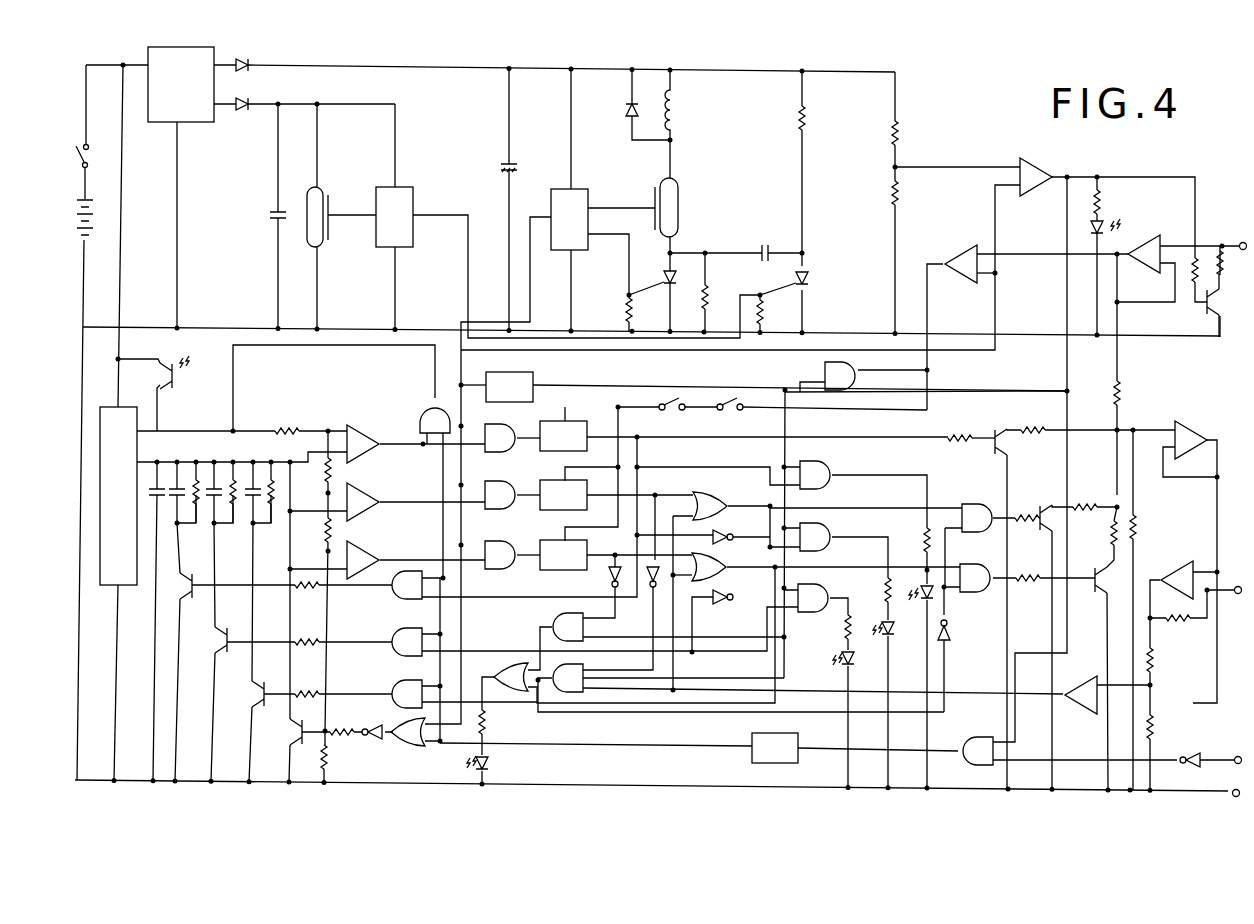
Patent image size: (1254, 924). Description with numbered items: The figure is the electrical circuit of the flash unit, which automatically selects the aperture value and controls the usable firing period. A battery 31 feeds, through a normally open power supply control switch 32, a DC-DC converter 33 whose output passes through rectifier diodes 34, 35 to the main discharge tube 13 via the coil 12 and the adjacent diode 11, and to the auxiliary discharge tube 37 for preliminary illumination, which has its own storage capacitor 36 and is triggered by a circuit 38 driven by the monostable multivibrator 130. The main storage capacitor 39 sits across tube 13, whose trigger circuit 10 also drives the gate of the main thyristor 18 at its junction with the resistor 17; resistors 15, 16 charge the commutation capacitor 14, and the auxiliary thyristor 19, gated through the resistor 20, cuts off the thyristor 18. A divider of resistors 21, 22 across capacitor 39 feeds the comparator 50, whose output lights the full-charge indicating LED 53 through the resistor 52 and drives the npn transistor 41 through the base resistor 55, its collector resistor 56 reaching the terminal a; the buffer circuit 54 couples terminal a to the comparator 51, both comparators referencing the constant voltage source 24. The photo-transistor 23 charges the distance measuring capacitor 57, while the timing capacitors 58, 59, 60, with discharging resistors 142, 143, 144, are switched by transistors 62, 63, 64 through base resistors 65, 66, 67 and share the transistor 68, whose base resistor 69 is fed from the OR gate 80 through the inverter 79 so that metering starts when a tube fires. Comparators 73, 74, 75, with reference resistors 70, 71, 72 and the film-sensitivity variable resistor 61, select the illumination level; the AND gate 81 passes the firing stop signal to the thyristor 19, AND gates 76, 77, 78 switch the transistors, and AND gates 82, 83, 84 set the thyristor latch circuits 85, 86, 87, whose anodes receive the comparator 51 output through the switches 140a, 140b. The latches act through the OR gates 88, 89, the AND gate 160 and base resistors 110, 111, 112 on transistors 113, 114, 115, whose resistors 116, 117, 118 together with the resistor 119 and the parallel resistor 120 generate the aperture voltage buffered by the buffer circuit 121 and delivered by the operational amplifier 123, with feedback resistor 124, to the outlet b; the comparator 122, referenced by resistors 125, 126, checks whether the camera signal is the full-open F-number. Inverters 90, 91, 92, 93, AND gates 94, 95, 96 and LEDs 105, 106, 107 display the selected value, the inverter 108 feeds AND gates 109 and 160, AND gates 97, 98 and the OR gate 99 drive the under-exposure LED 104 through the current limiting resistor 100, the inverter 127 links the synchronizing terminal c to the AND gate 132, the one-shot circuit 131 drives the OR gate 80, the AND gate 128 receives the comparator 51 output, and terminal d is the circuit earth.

The trigger circuit 10 is at (588, 191).
The diode 11 is at (624, 124).
The coil 12 is at (676, 100).
The main discharge tube 13 is at (678, 202).
The commutation capacitor 14 is at (765, 245).
The resistor 15 is at (810, 112).
The resistor 16 is at (710, 303).
The resistor 17 is at (620, 304).
The main thyristor 18 is at (678, 286).
The auxiliary thyristor 19 is at (792, 280).
The resistor 20 is at (765, 313).
The resistor 21 is at (901, 137).
The resistor 22 is at (906, 202).
The photo-transistor 23 is at (175, 378).
The constant voltage source 24 is at (103, 407).
The battery 31 is at (87, 232).
The power supply control switch 32 is at (88, 169).
The DC-DC converter 33 is at (196, 122).
The rectifier diode 34 is at (252, 60).
The rectifier diode 35 is at (247, 116).
The storage capacitor 36 is at (266, 219).
The auxiliary discharge tube 37 is at (322, 184).
The circuit 38 is at (413, 206).
The main storage capacitor 39 is at (494, 167).
The npn transistor 41 is at (1224, 314).
The comparator 50 is at (1034, 166).
The comparator 51 is at (956, 284).
The resistor 52 is at (1110, 202).
The light-emitting diode 53 is at (1123, 215).
The buffer circuit 54 is at (1164, 236).
The resistor 55 is at (1181, 277).
The resistor 56 is at (1224, 264).
The distance measuring capacitor 57 is at (167, 510).
The first timing capacitor 58 is at (173, 472).
The second timing capacitor 59 is at (211, 472).
The third timing capacitor 60 is at (250, 472).
The variable resistor 61 is at (298, 426).
The switching transistor 62 is at (180, 588).
The switching transistor 63 is at (212, 642).
The switching transistor 64 is at (252, 692).
The base resistor 65 is at (307, 591).
The base resistor 66 is at (307, 648).
The base resistor 67 is at (309, 700).
The npn transistor 68 is at (289, 732).
The base resistor 69 is at (345, 744).
The reference voltage supply resistor 70 is at (318, 754).
The reference voltage supply resistor 71 is at (322, 532).
The reference voltage supply resistor 72 is at (322, 474).
The comparator 73 is at (362, 429).
The comparator 74 is at (368, 487).
The comparator 75 is at (368, 547).
The AND gate 76 is at (407, 585).
The AND gate 77 is at (407, 642).
The AND gate 78 is at (407, 694).
The inverter 79 is at (381, 744).
The OR gate 80 is at (416, 746).
The AND gate 81 is at (435, 420).
The AND gate 82 is at (512, 438).
The AND gate 83 is at (512, 495).
The AND gate 84 is at (512, 555).
The latch circuit 85 is at (563, 436).
The latch circuit 86 is at (563, 495).
The latch circuit 87 is at (563, 555).
The OR gate 88 is at (714, 492).
The OR gate 89 is at (724, 555).
The inverter 90 is at (728, 532).
The inverter 91 is at (724, 605).
The inverter 92 is at (650, 590).
The inverter 93 is at (604, 588).
The AND gate 94 is at (815, 475).
The AND gate 95 is at (815, 537).
The AND gate 96 is at (813, 598).
The AND gate 97 is at (568, 627).
The AND gate 98 is at (568, 678).
The OR gate 99 is at (498, 668).
The current limiting resistor 100 is at (488, 726).
The LED 104 is at (494, 760).
The LED 105 is at (844, 618).
The LED 106 is at (878, 620).
The LED 107 is at (918, 576).
The inverter 108 is at (951, 636).
The AND gate 109 is at (977, 596).
The base resistor 110 is at (960, 426).
The base resistor 111 is at (1026, 535).
The base resistor 112 is at (1028, 586).
The npn transistor 113 is at (1014, 454).
The npn transistor 114 is at (1039, 504).
The npn transistor 115 is at (1095, 598).
The resistor 116 is at (1030, 426).
The resistor 117 is at (1082, 500).
The resistor 118 is at (1112, 620).
The resistor 119 is at (1122, 392).
The resistor 120 is at (1138, 532).
The buffer circuit 121 is at (1194, 422).
The comparator 122 is at (1068, 710).
The operational amplifier 123 is at (1176, 570).
The resistor 124 is at (1182, 626).
The resistor 125 is at (1162, 658).
The resistor 126 is at (1160, 727).
The inverter 127 is at (1191, 754).
The AND gate 128 is at (818, 354).
The monostable multivibrator 130 is at (531, 369).
The monostable multivibrator 131 is at (752, 764).
The AND gate 132 is at (907, 743).
The switch 140a is at (666, 410).
The switch 140b is at (736, 410).
The discharging resistor 142 is at (198, 516).
The discharging resistor 143 is at (238, 516).
The discharging resistor 144 is at (276, 516).
The AND gate 160 is at (971, 503).
The interconnection terminal a is at (1240, 242).
The terminal b is at (1234, 586).
The synchronizing terminal c is at (1234, 756).
The circuit earth terminal d is at (1230, 790).